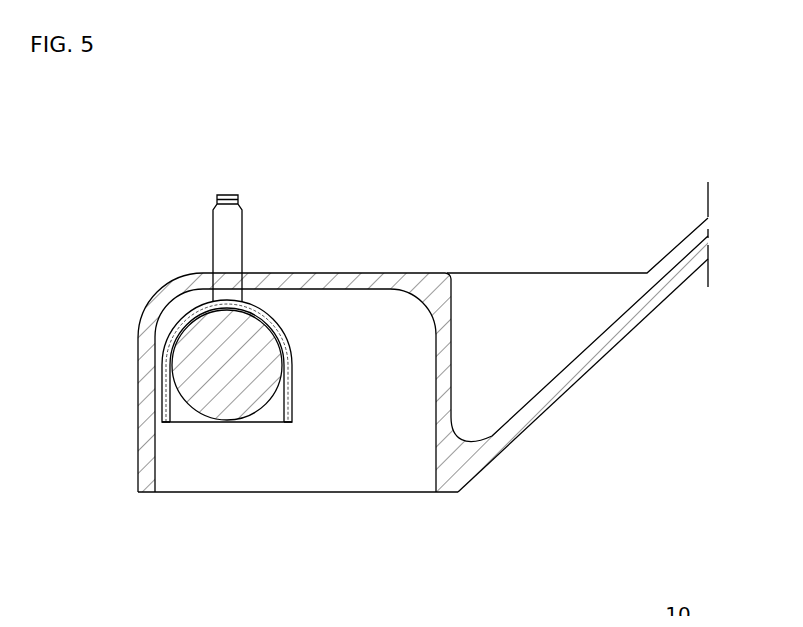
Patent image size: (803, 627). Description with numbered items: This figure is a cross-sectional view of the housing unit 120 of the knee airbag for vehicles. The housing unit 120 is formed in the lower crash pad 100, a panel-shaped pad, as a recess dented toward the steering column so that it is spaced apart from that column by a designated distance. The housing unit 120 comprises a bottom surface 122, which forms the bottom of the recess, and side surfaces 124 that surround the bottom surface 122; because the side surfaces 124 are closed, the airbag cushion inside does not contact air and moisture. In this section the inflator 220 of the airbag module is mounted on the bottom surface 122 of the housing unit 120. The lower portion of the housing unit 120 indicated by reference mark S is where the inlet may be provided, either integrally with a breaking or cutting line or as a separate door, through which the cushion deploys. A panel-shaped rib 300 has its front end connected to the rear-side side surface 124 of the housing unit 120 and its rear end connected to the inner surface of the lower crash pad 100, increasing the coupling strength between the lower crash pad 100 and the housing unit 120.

The lower crash pad 100 is at (582, 387).
The housing unit 120 is at (261, 325).
The bottom surface 122 is at (342, 280).
The side surfaces 124 is at (445, 362).
The inflator 220 is at (231, 207).
The rib 300 is at (528, 295).
The inlet portion of the housing unit S is at (288, 487).